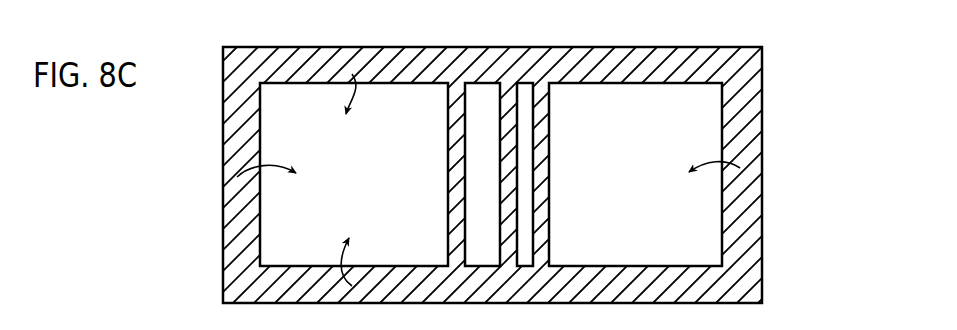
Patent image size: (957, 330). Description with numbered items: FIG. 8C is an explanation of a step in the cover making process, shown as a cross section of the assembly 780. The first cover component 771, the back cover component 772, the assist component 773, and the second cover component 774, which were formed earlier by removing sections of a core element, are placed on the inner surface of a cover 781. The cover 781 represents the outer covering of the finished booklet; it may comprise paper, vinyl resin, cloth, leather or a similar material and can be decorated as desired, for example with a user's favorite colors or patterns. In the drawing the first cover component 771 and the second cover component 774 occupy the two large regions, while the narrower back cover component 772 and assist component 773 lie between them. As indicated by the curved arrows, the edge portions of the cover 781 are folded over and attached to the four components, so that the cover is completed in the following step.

The first cover component 771 is at (345, 92).
The back cover component 772 is at (483, 103).
The assist component 773 is at (527, 103).
The second cover component 774 is at (641, 103).
The light-source unit housing 780 is at (478, 156).
The cover 781 is at (753, 80).